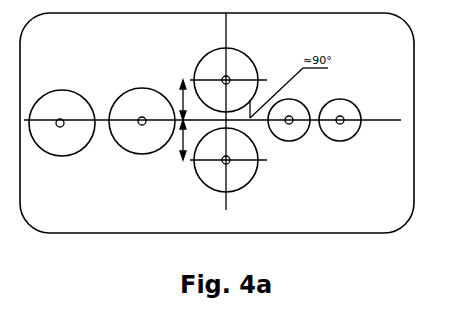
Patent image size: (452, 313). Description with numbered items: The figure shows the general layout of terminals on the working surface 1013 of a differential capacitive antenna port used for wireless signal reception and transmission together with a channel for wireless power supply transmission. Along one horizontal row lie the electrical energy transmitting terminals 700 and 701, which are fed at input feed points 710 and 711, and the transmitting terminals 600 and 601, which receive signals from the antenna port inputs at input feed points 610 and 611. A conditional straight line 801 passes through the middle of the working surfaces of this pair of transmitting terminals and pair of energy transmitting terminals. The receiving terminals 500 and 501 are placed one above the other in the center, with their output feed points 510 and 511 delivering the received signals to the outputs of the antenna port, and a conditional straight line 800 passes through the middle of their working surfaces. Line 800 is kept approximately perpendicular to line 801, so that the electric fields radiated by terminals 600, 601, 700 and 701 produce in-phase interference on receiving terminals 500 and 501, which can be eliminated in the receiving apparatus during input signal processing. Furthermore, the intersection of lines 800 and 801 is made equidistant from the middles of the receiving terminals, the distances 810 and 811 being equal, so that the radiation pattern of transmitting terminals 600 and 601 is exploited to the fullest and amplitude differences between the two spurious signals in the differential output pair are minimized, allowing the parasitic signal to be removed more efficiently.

The working surface 1013 is at (58, 14).
The electrical energy transmitting terminal 700 is at (56, 93).
The input feed point 710 is at (58, 127).
The electrical energy transmitting terminal 701 is at (152, 91).
The input feed point 711 is at (140, 125).
The receiving terminal 500 is at (204, 56).
The output feed point 510 is at (230, 78).
The conditional straight line 800 is at (238, 17).
The receiving terminal 501 is at (203, 183).
The output feed point 511 is at (229, 163).
The distance 810 is at (182, 95).
The distance 811 is at (182, 150).
The transmitting terminal 600 is at (291, 99).
The input feed point 610 is at (289, 124).
The transmitting terminal 601 is at (341, 99).
The input feed point 611 is at (339, 124).
The conditional straight line 801 is at (373, 121).